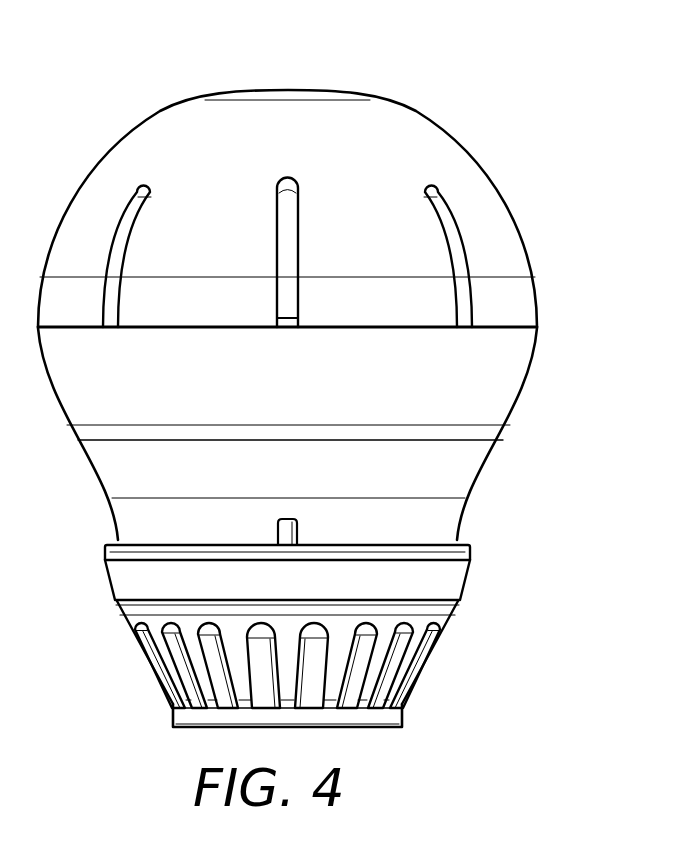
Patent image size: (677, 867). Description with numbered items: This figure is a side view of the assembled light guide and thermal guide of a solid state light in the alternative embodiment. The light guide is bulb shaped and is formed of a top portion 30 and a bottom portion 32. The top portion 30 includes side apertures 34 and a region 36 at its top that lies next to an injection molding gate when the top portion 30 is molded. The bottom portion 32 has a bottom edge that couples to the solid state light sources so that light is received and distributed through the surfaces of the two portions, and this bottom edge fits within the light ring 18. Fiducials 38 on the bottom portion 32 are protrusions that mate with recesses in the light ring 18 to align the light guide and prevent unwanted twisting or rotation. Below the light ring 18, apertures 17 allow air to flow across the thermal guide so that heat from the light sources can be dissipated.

The apertures 17 is at (363, 638).
The light ring 18 is at (465, 577).
The top portion 30 is at (465, 158).
The bottom portion 32 is at (527, 400).
The side apertures 34 is at (293, 210).
The region 36 is at (288, 90).
The fiducials 38 is at (287, 530).